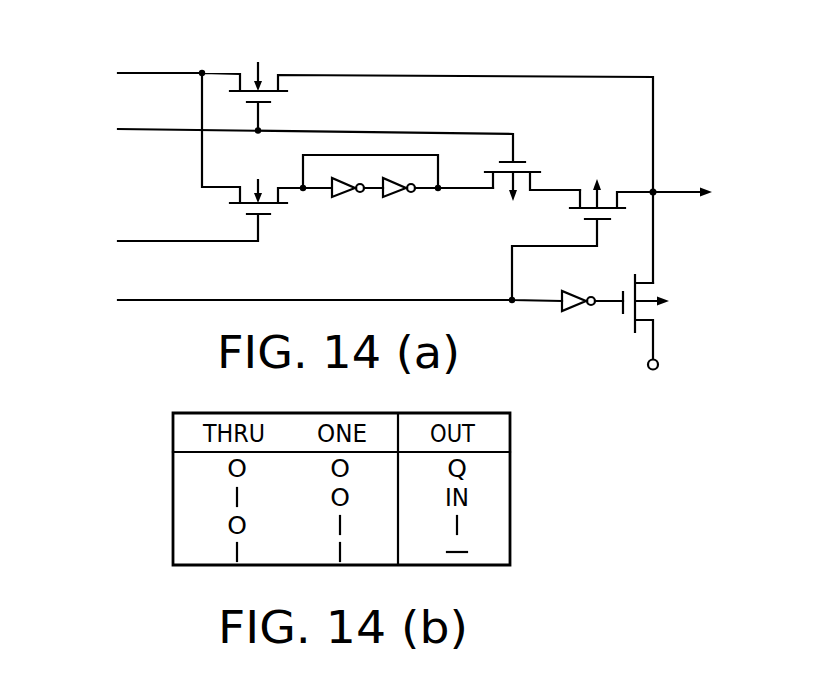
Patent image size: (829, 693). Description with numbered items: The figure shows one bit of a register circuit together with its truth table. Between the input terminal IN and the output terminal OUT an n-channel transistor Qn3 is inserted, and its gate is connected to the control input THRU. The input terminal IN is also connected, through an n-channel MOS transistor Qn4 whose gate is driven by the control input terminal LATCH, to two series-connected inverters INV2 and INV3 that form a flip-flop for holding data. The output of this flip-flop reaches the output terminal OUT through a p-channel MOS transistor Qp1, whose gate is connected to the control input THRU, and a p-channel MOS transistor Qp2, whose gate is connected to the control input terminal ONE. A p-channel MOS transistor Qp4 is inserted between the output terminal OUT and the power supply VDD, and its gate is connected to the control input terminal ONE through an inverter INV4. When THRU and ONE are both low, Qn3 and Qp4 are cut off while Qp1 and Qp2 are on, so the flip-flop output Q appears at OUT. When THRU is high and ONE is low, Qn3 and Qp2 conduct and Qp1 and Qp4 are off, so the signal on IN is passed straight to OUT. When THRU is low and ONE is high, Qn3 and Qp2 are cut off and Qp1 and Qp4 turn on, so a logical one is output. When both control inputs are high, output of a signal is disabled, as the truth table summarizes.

The n-channel transistor Qn3 is at (261, 80).
The n-channel MOS transistor Qn4 is at (268, 179).
The p-channel MOS transistor Qp1 is at (532, 201).
The p-channel MOS transistor Qp2 is at (611, 185).
The p-channel MOS transistor Qp4 is at (674, 317).
The inverter INV2 is at (368, 196).
The inverter INV3 is at (438, 208).
The inverter INV4 is at (575, 321).
The power supply VDD is at (659, 385).
The input terminal IN is at (366, 170).
The control input terminal THRU is at (276, 138).
The control input terminal LATCH is at (140, 235).
The control input terminal ONE is at (325, 266).
The output terminal OUT is at (712, 193).